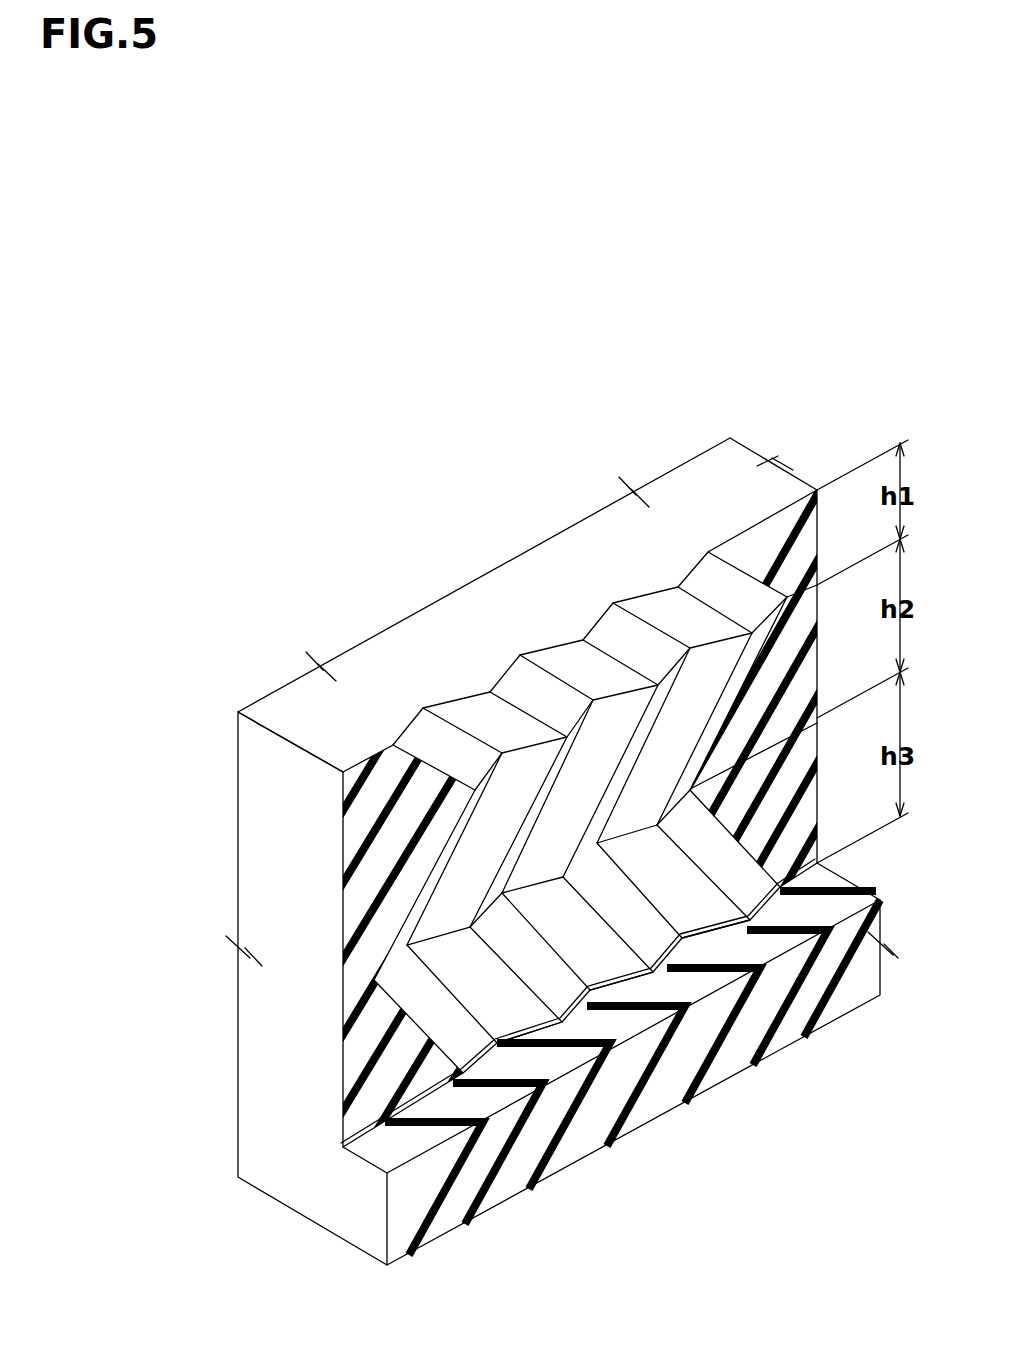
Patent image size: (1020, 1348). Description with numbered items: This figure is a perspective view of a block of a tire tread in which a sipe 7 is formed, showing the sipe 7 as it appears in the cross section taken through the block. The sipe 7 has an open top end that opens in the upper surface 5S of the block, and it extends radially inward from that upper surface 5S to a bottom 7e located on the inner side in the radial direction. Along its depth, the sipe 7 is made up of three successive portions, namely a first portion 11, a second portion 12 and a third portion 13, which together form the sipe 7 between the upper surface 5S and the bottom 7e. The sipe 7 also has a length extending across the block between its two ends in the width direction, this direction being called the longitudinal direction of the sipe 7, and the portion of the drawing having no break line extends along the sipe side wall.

The upper surface of the block 5S is at (477, 618).
The sipe 7 is at (163, 867).
The bottom of the sipe 7e is at (612, 980).
The first portion 11 is at (455, 752).
The second portion 12 is at (477, 862).
The third portion 13 is at (440, 1017).